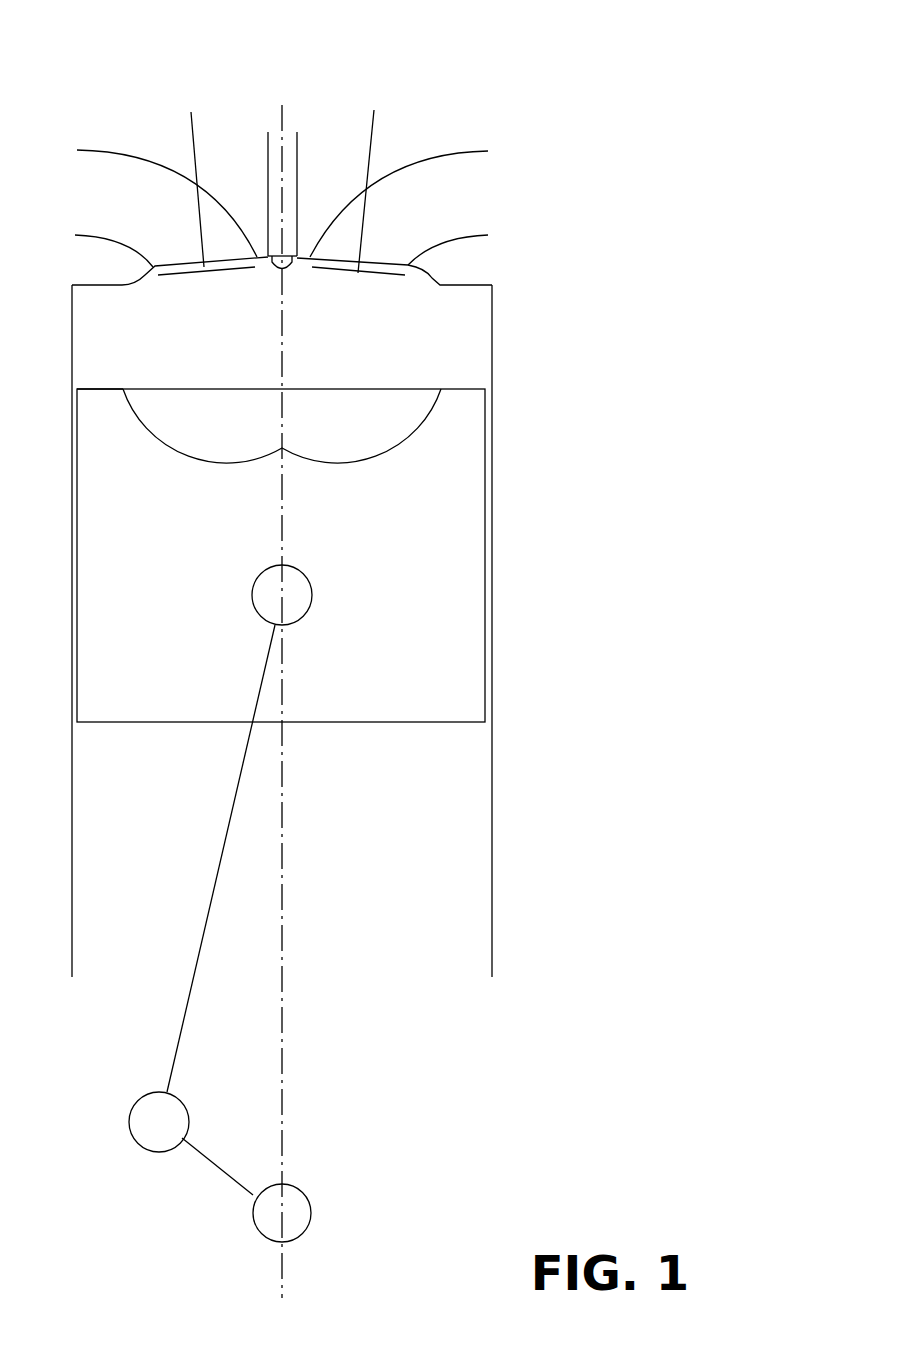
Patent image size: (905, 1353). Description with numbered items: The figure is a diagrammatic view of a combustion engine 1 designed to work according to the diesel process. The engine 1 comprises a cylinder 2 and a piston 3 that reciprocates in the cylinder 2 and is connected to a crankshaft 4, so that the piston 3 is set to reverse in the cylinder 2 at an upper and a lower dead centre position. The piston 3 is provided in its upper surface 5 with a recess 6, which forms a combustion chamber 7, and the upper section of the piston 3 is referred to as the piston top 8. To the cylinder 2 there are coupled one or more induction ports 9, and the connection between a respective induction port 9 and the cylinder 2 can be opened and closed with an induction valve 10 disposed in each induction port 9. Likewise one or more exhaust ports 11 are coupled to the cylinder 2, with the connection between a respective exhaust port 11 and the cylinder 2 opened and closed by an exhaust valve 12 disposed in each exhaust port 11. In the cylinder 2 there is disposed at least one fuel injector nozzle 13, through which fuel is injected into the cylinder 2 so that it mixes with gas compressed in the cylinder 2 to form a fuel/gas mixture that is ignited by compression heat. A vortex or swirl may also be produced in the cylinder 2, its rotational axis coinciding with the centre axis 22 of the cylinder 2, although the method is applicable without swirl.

The combustion engine 1 is at (440, 95).
The cylinder 2 is at (472, 320).
The piston 3 is at (462, 483).
The crankshaft 4 is at (305, 1190).
The upper surface 5 is at (462, 390).
The recess 6 is at (430, 410).
The combustion chamber 7 is at (163, 410).
The piston top 8 is at (108, 388).
The induction port 9 is at (462, 232).
The induction valve 10 is at (377, 277).
The exhaust port 11 is at (93, 235).
The exhaust valve 12 is at (193, 272).
The fuel injector nozzle 13 is at (287, 270).
The centre axis 22 is at (282, 862).